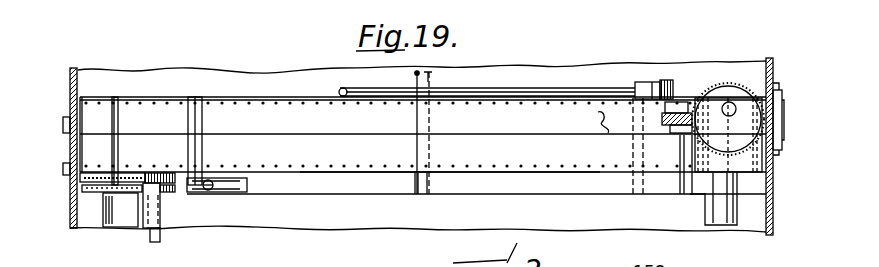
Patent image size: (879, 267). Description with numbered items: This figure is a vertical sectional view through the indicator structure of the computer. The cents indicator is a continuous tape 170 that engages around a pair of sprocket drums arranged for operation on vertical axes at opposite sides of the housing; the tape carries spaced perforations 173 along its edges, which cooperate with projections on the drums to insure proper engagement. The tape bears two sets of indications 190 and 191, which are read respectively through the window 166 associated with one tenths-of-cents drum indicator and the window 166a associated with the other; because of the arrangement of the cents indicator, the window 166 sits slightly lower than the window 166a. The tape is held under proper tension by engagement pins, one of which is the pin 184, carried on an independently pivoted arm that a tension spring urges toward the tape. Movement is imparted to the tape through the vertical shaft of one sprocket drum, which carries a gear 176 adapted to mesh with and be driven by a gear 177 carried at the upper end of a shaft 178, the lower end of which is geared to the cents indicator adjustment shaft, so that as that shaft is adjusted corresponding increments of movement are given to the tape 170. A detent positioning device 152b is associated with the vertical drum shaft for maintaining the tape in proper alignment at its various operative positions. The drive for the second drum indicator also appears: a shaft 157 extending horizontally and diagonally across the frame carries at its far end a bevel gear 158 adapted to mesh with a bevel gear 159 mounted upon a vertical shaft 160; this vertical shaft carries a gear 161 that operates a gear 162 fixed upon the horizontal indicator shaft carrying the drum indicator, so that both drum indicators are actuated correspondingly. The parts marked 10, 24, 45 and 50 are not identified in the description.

The housing frame 10 is at (67, 230).
The window 166 is at (66, 132).
The window 166a is at (773, 127).
The set of indications 191 is at (218, 110).
The engagement pin 184 is at (197, 96).
The spaced perforations 173 is at (297, 100).
The pointer 45 is at (432, 77).
The shaft 157 is at (552, 88).
The gear 161 is at (631, 82).
The bevel gear 158 is at (660, 82).
The bevel gear 159 is at (692, 97).
The gear 162 is at (730, 83).
The shaft 24 is at (747, 121).
The bearing 50 is at (747, 153).
The gear 176 is at (92, 194).
The detent positioning device 152b is at (148, 186).
The gear 177 is at (170, 188).
The shaft 178 is at (157, 215).
The set of indications 190 is at (397, 152).
The continuous tape 170 is at (530, 160).
The vertical shaft 160 is at (677, 152).